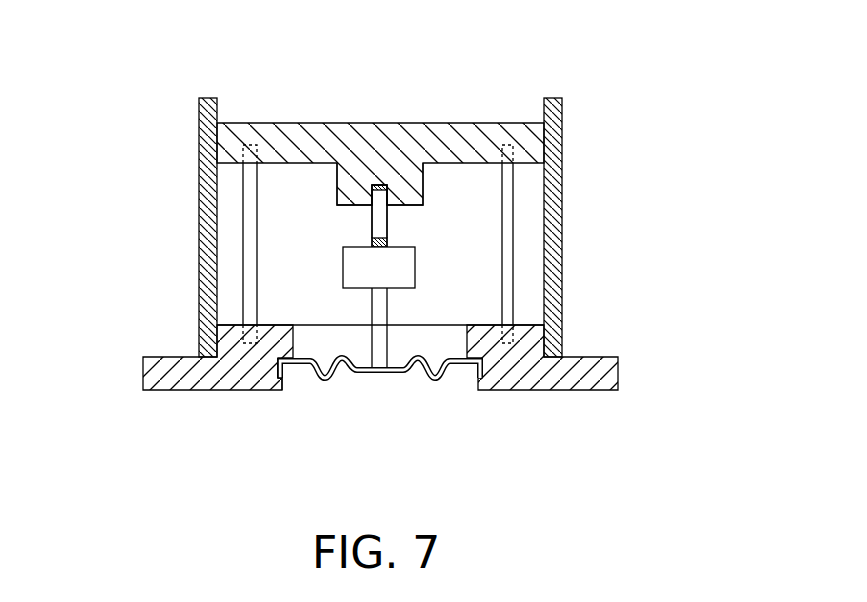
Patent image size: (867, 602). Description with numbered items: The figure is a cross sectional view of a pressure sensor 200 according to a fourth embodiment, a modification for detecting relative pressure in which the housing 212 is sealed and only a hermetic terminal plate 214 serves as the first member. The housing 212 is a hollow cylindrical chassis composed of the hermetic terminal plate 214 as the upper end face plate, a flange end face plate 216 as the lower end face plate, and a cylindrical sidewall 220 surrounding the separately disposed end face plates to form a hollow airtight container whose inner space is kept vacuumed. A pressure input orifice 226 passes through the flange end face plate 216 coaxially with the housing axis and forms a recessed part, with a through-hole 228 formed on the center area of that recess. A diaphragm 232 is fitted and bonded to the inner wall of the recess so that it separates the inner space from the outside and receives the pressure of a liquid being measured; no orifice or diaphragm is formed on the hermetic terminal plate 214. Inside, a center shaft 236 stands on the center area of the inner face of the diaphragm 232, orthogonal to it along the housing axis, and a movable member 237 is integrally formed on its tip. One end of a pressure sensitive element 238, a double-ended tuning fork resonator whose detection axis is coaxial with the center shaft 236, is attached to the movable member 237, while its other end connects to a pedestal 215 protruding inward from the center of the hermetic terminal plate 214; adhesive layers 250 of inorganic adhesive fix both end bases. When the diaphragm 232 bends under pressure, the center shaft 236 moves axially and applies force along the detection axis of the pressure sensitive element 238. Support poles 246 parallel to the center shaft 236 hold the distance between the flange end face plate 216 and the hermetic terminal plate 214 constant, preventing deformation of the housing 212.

The pressure sensor 200 is at (594, 96).
The housing 212 is at (656, 130).
The hermetic terminal plate 214 is at (544, 143).
The pedestal 215 is at (423, 186).
The cylindrical sidewall 220 is at (562, 222).
The flange end face plate 216 is at (583, 368).
The support poles 246 is at (243, 243).
The adhesive layers 250 is at (372, 187).
The center shaft 236 is at (387, 310).
The pressure sensitive element 238 is at (371, 217).
The movable member 237 is at (343, 268).
The through-hole 228 is at (297, 345).
The pressure input orifice 226 is at (283, 378).
The diaphragm 232 is at (351, 386).